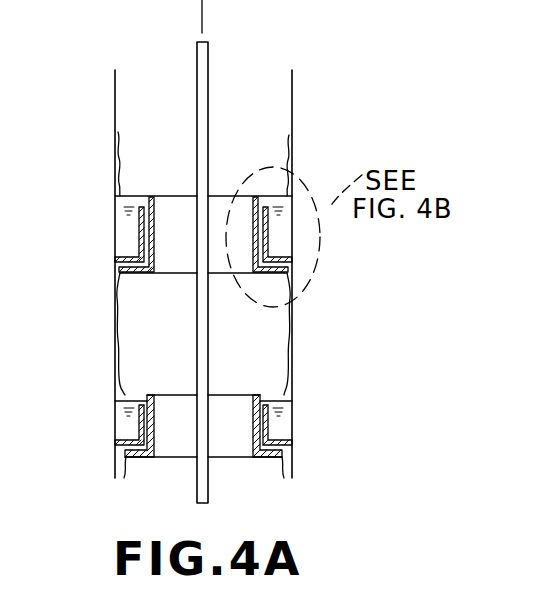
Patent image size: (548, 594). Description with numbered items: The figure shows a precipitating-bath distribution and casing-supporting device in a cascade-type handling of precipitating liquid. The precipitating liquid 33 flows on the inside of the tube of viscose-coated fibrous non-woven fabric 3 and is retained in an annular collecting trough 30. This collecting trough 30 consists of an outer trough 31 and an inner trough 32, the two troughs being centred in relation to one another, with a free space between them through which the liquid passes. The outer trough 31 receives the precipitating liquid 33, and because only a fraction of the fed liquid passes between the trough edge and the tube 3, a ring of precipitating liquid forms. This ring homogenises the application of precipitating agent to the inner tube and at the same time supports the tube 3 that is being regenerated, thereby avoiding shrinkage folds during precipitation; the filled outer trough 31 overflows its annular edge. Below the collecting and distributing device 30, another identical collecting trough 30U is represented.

The viscose-coated fibrous non-woven fabric tube 3 is at (292, 102).
The precipitating liquid 33 is at (115, 172).
The annular collecting trough 30 is at (125, 232).
The outer trough 31 is at (137, 257).
The inner trough 32 is at (117, 297).
The identical collecting trough 30U is at (127, 425).